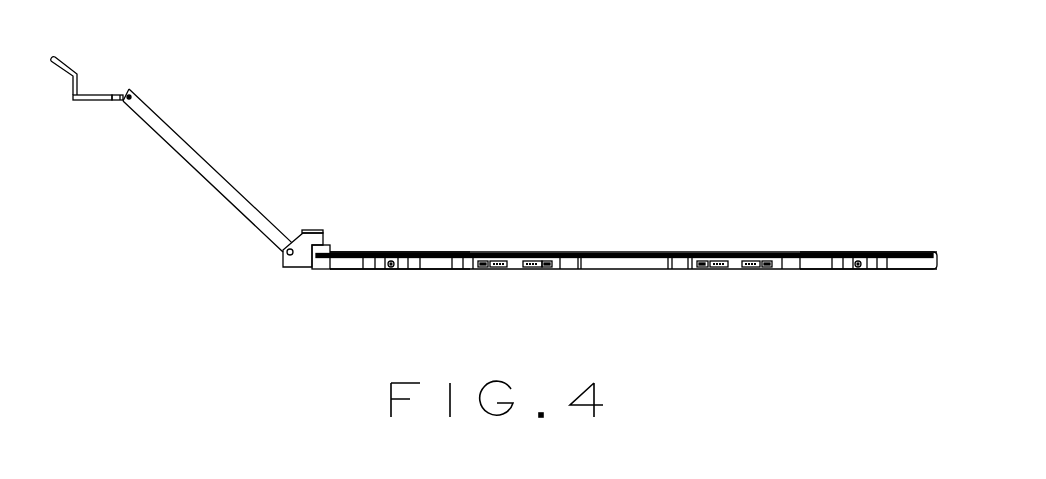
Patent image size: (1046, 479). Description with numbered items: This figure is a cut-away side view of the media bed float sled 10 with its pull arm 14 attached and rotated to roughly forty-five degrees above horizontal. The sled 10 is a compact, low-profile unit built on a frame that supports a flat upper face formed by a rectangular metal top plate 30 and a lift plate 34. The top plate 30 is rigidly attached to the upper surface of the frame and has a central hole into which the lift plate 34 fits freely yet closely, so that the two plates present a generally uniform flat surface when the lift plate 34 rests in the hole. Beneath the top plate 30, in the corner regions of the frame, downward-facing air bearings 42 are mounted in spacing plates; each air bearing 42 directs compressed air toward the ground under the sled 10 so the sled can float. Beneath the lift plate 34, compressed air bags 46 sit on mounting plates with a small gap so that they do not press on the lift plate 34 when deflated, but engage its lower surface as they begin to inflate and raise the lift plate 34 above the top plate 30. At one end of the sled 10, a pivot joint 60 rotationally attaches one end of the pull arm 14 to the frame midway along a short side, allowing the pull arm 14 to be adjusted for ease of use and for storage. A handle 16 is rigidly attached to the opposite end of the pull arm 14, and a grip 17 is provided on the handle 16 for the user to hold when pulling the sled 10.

The sled 10 is at (490, 96).
The pull arm 14 is at (198, 165).
The handle 16 is at (102, 92).
The grip 17 is at (62, 58).
The top plate 30 is at (392, 253).
The lift plate 34 is at (650, 252).
The air bearing 42 is at (391, 268).
The compressed air bag 46 is at (513, 266).
The pivot joint 60 is at (305, 235).